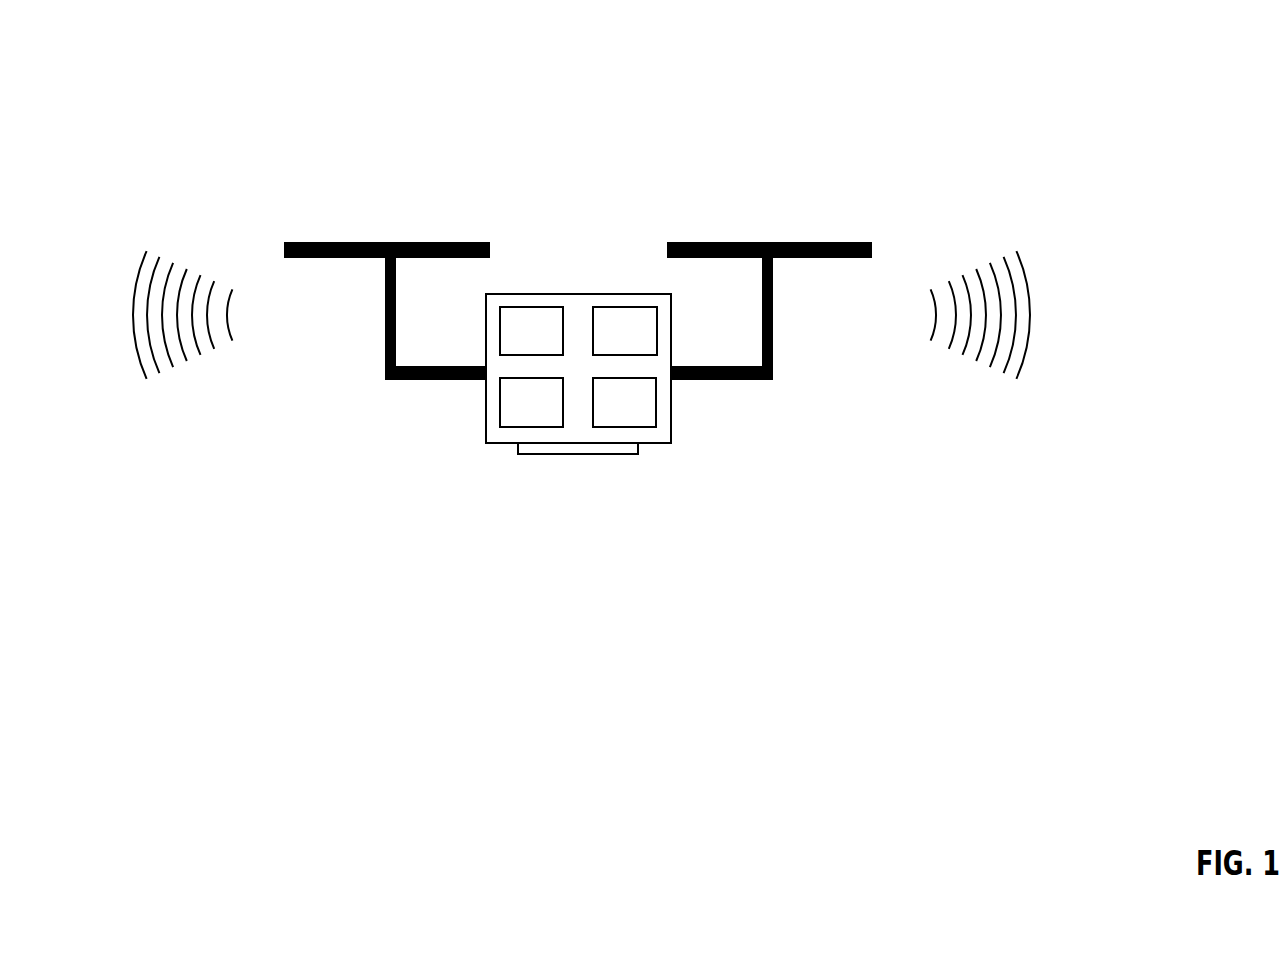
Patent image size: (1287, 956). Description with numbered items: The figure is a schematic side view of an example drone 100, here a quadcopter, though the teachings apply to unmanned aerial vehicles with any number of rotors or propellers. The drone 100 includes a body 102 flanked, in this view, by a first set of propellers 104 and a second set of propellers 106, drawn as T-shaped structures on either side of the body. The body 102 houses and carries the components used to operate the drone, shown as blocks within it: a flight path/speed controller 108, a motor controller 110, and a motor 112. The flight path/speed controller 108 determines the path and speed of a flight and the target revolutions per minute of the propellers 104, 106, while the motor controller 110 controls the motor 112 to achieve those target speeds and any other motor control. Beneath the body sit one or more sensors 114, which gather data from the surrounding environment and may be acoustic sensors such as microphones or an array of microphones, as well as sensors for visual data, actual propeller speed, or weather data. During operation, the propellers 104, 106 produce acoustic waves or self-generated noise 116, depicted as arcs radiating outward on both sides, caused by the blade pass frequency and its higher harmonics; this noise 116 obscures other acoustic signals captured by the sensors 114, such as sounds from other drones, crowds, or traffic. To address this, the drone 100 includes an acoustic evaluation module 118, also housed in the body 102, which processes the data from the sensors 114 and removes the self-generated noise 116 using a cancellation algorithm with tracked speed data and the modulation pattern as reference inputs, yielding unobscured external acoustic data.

The drone 100 is at (148, 61).
The body 102 is at (486, 395).
The first set of propellers 104 is at (447, 242).
The second set of propellers 106 is at (830, 242).
The flight path/speed controller 108 is at (523, 427).
The motor controller 110 is at (633, 427).
The motor 112 is at (636, 307).
The sensors 114 is at (572, 454).
The self-generated noise 116 is at (188, 368).
The acoustic evaluation module 118 is at (522, 307).